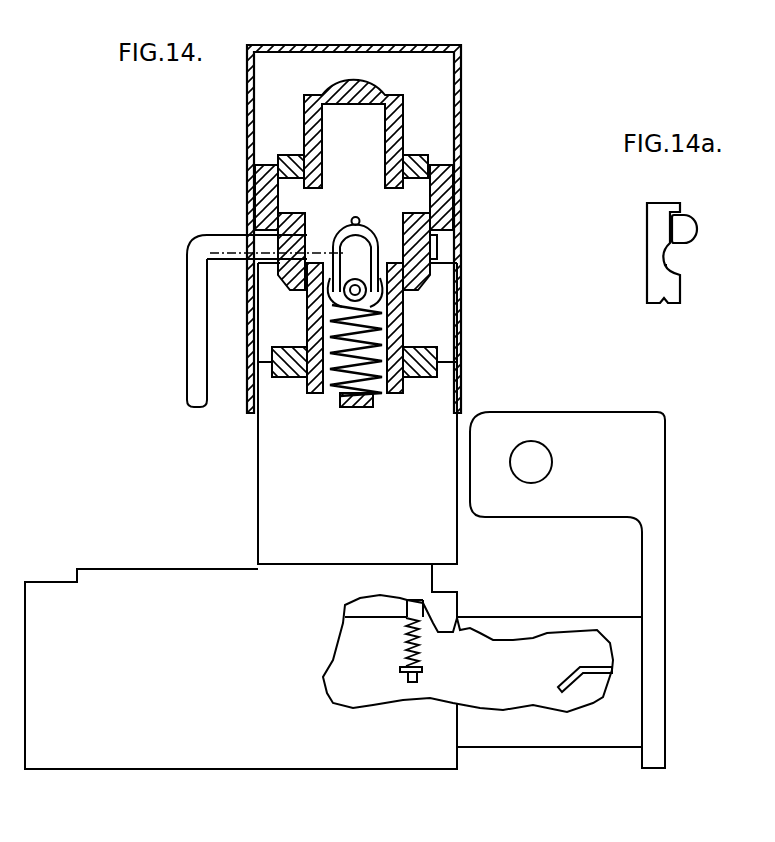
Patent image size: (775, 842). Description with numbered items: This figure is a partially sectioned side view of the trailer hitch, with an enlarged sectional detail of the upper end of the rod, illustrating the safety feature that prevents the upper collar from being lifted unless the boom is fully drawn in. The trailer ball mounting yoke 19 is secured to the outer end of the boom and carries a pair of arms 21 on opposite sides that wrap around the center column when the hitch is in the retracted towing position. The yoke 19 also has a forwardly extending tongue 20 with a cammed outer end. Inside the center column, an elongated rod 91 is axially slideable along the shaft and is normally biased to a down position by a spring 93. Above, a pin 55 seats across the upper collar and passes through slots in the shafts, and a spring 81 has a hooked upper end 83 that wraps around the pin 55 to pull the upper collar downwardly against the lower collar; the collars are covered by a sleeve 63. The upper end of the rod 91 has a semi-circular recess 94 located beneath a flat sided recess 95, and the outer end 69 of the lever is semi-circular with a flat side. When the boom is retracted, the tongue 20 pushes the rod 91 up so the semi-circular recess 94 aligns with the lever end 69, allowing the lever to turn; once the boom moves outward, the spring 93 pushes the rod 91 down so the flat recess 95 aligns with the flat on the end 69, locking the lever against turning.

In FIG. 14, the trailer ball mounting yoke 19 is at (653, 745).
In FIG. 14, the tongue 20 is at (578, 677).
In FIG. 14, the arms 21 is at (490, 470).
In FIG. 14, the pin 55 is at (328, 317).
In FIG. 14, the sleeve 63 is at (458, 377).
In FIG. 14, the spring 81 is at (392, 331).
In FIG. 14, the hooked upper end 83 is at (368, 288).
In FIG. 14, the rod 91 is at (422, 673).
In FIG. 14A, the rod 91 is at (660, 205).
In FIG. 14, the spring 93 is at (403, 643).
In FIG. 14A, the outer end of lever 69 is at (687, 220).
In FIG. 14A, the semi-circular recess 94 is at (668, 265).
In FIG. 14A, the flat sided recess 95 is at (672, 227).